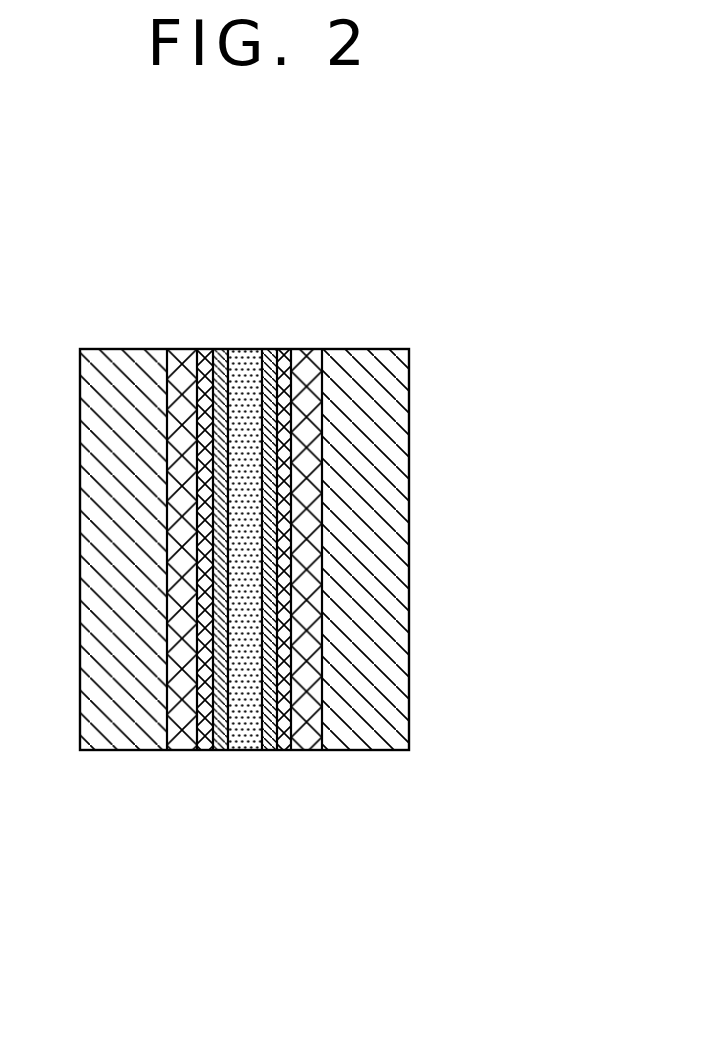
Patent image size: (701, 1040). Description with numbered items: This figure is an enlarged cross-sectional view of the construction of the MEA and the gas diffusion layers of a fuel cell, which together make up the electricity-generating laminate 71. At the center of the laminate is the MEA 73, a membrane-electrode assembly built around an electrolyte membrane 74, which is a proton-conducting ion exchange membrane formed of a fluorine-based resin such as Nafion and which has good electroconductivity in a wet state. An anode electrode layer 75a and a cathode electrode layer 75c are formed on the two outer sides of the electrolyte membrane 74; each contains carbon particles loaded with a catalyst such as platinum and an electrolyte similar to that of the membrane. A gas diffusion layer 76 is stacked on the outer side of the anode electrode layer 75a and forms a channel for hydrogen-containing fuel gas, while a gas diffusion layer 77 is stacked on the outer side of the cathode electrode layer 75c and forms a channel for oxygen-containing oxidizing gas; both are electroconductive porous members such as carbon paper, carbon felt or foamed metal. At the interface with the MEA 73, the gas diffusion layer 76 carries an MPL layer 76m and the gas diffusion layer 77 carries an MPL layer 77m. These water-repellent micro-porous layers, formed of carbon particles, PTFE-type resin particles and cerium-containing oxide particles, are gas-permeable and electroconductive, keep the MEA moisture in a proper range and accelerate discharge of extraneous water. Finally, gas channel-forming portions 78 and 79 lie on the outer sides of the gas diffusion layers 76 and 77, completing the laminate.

The electricity-generating laminate 71 is at (244, 534).
The MEA 73 is at (246, 501).
The electrolyte membrane 74 is at (236, 349).
The anode electrode layer 75a is at (222, 349).
The cathode electrode layer 75c is at (264, 349).
The gas diffusion layer 76 is at (144, 516).
The MPL layer 76m is at (205, 349).
The gas diffusion layer 77 is at (352, 517).
The MPL layer 77m is at (283, 349).
The gas channel-forming portion 78 is at (110, 349).
The gas channel-forming portion 79 is at (384, 349).